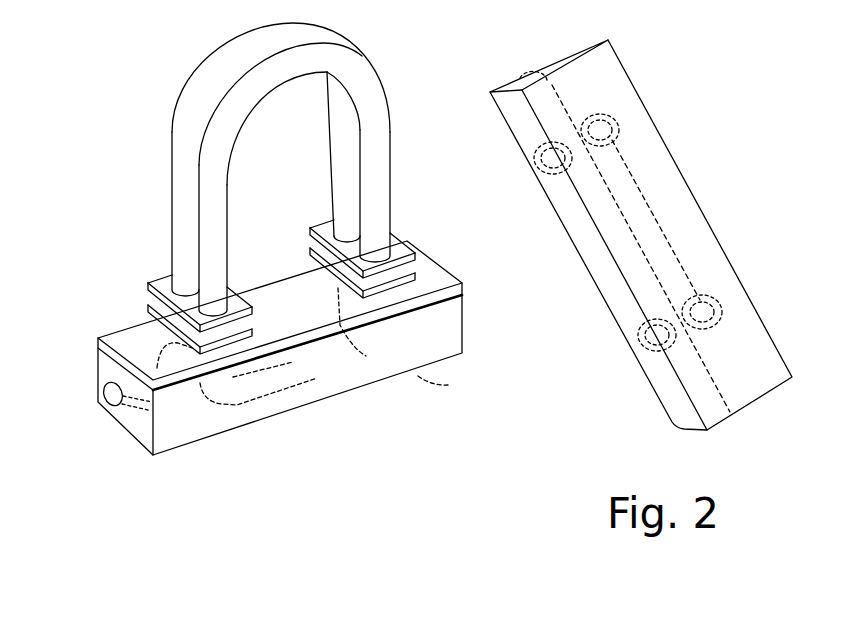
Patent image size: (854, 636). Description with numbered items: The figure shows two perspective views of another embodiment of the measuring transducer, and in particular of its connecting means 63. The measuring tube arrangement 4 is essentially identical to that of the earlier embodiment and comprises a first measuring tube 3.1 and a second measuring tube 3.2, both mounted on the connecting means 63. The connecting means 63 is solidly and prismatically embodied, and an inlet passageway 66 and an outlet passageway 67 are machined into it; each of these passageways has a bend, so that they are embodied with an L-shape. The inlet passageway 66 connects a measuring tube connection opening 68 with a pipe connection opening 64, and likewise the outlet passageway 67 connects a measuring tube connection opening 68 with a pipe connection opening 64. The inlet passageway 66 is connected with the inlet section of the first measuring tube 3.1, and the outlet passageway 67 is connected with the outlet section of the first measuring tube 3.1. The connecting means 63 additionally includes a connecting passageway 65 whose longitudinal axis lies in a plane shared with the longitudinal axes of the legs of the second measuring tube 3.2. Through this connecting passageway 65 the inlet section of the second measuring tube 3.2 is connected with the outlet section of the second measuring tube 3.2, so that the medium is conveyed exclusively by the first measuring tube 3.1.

The measuring tube arrangement 4 is at (218, 161).
The first measuring tube 3.1 is at (187, 190).
The second measuring tube 3.2 is at (210, 227).
The connecting means 63 is at (357, 399).
The pipe connection opening 64 is at (105, 401).
The connecting passageway 65 is at (677, 232).
The inlet passageway 66 is at (355, 352).
The outlet passageway 67 is at (462, 268).
The measuring tube connection opening 68 is at (705, 313).